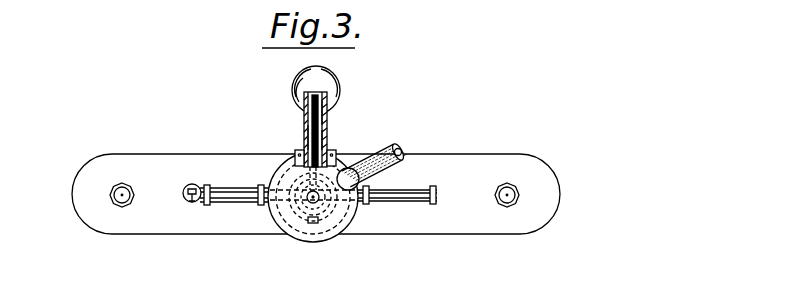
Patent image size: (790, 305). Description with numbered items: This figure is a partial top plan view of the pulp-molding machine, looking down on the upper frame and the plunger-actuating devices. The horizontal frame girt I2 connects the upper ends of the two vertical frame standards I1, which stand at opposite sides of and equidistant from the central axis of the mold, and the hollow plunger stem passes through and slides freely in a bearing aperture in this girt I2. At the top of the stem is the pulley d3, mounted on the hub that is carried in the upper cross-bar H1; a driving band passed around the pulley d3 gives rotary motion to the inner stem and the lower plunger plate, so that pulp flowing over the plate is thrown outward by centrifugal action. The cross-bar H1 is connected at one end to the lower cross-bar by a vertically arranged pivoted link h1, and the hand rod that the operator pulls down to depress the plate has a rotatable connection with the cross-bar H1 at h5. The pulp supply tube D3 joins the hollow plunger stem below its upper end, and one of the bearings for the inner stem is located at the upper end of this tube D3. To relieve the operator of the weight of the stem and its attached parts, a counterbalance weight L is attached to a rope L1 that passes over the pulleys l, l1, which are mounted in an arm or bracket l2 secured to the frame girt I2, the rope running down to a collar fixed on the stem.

The counterbalance weight L is at (333, 94).
The rope L1 is at (305, 92).
The pulley l is at (304, 137).
The pulley l1 is at (327, 112).
The arm or bracket l2 is at (327, 141).
The pulp supply tube D3 is at (385, 150).
The frame standard I1 is at (526, 195).
The frame girt I2 is at (316, 194).
The rotatable connection h5 is at (186, 197).
The cross-bar H1 is at (246, 178).
The pivoted link h1 is at (437, 196).
The pulley d3 is at (294, 220).